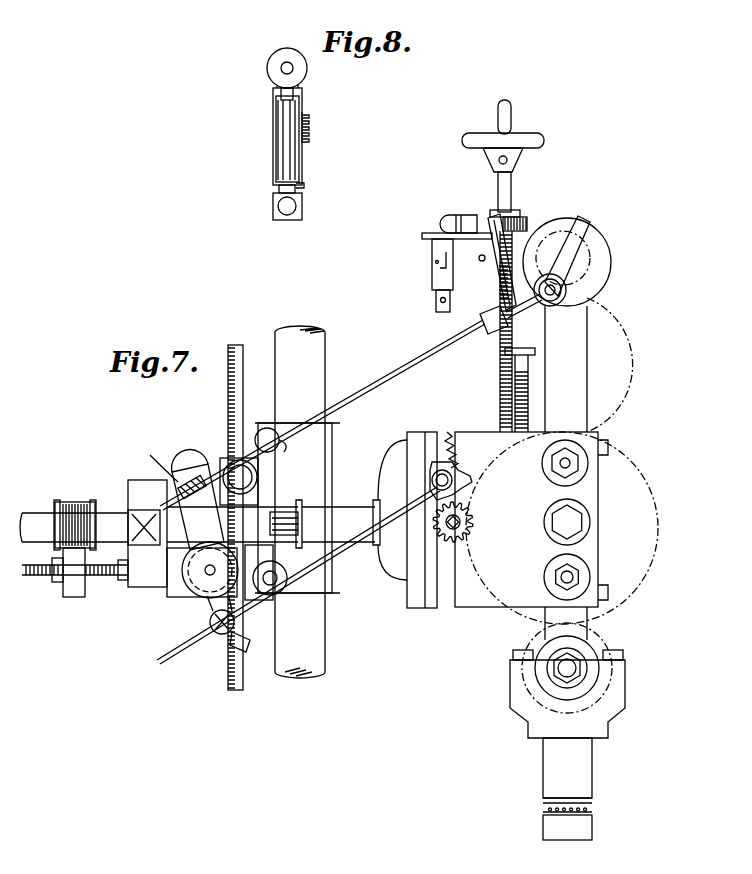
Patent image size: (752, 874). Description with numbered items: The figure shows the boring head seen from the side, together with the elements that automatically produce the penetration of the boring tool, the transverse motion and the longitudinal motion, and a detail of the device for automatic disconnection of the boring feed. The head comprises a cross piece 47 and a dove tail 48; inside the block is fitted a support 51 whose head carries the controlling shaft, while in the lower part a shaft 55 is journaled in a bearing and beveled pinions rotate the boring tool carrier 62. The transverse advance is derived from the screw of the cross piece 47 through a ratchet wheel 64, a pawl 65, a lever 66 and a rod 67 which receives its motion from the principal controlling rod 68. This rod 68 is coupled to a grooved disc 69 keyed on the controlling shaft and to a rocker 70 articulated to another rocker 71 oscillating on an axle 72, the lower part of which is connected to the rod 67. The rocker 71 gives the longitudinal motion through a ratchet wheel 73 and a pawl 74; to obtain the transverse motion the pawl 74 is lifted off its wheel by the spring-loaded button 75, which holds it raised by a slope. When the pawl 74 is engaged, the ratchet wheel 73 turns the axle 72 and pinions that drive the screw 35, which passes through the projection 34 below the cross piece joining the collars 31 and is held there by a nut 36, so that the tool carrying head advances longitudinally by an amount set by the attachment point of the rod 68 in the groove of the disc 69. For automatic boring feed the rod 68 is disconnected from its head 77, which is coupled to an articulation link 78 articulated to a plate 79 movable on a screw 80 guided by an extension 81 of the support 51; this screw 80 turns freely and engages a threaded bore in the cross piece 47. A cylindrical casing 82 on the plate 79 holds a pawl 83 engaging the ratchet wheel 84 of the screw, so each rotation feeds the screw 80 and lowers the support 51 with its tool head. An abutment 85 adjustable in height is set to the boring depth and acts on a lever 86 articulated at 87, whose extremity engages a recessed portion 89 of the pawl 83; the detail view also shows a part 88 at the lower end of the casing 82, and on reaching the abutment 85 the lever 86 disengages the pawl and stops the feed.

In FIG. 7, the collar 31 is at (57, 500).
In FIG. 7, the projection 34 is at (76, 598).
In FIG. 7, the screw 35 is at (30, 578).
In FIG. 7, the nut 36 is at (58, 584).
In FIG. 7, the cross piece 47 is at (479, 603).
In FIG. 7, the dove tail 48 is at (442, 562).
In FIG. 7, the support 51 is at (587, 386).
In FIG. 7, the shaft 55 is at (576, 660).
In FIG. 7, the boring tool carrier 62 is at (543, 830).
In FIG. 7, the ratchet wheel 64 is at (470, 527).
In FIG. 7, the pawl 65 is at (470, 490).
In FIG. 7, the lever 66 is at (449, 432).
In FIG. 7, the rod 67 is at (352, 544).
In FIG. 7, the principal controlling rod 68 is at (424, 348).
In FIG. 7, the grooved disc 69 is at (612, 262).
In FIG. 7, the rocker 70 is at (183, 494).
In FIG. 7, the rocker 71 is at (198, 642).
In FIG. 7, the axle 72 is at (205, 575).
In FIG. 7, the ratchet wheel 73 is at (212, 612).
In FIG. 7, the pawl 74 is at (172, 586).
In FIG. 7, the button 75 is at (205, 470).
In FIG. 7, the head 77 is at (537, 312).
In FIG. 7, the articulation link 78 is at (432, 286).
In FIG. 8, the plate 79 is at (300, 222).
In FIG. 7, the plate 79 is at (424, 239).
In FIG. 7, the screw 80 is at (500, 350).
In FIG. 7, the extension 81 is at (545, 224).
In FIG. 8, the cylinder 82 is at (276, 140).
In FIG. 7, the cylinder 82 is at (470, 214).
In FIG. 8, the pawl 83 is at (275, 94).
In FIG. 7, the ratchet wheel 84 is at (526, 218).
In FIG. 7, the abutment 85 is at (530, 402).
In FIG. 8, the lever 86 is at (312, 140).
In FIG. 7, the lever 86 is at (500, 286).
In FIG. 7, the articulation 87 is at (479, 261).
In FIG. 8, the tab 88 is at (305, 186).
In FIG. 8, the recessed portion 89 is at (278, 186).